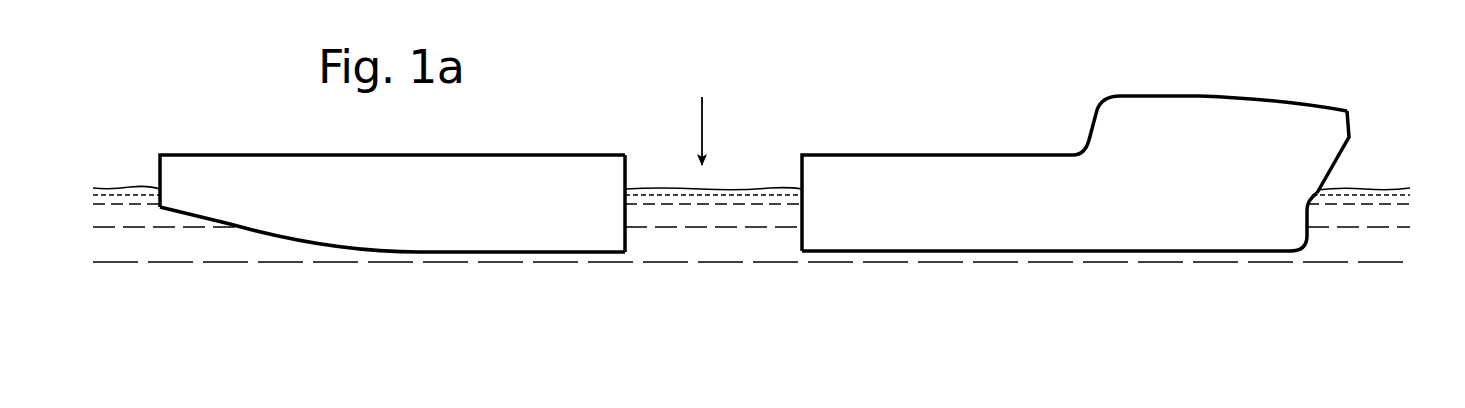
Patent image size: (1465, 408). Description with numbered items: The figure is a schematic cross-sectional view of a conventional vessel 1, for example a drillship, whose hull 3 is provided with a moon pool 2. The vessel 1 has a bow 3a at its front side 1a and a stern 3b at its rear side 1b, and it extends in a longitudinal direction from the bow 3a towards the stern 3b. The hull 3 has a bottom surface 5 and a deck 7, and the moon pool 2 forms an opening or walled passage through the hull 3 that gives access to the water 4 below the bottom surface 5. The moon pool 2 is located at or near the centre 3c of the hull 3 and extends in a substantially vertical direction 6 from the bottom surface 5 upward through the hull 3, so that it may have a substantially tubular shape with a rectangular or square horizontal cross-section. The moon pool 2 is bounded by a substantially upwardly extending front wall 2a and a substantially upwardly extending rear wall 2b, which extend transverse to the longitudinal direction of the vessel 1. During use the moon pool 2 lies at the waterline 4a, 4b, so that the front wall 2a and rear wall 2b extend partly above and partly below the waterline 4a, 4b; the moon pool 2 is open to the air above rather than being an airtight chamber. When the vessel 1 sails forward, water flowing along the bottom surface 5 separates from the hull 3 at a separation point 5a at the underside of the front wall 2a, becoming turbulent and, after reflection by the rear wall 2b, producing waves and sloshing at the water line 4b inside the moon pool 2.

The vessel 1 is at (1035, 108).
The front side 1a is at (1362, 120).
The rear side 1b is at (153, 158).
The moon pool 2 is at (726, 130).
The front wall 2a is at (802, 215).
The rear wall 2b is at (625, 215).
The hull 3 is at (942, 232).
The bow 3a is at (1323, 230).
The stern 3b is at (190, 218).
The centre of the hull 3c is at (800, 137).
The water 4 is at (728, 297).
The waterline 4a is at (1370, 186).
The waterline 4b is at (753, 187).
The bottom surface 5 is at (467, 252).
The separation point 5a is at (802, 251).
The vertical direction 6 is at (702, 120).
The deck 7 is at (950, 155).